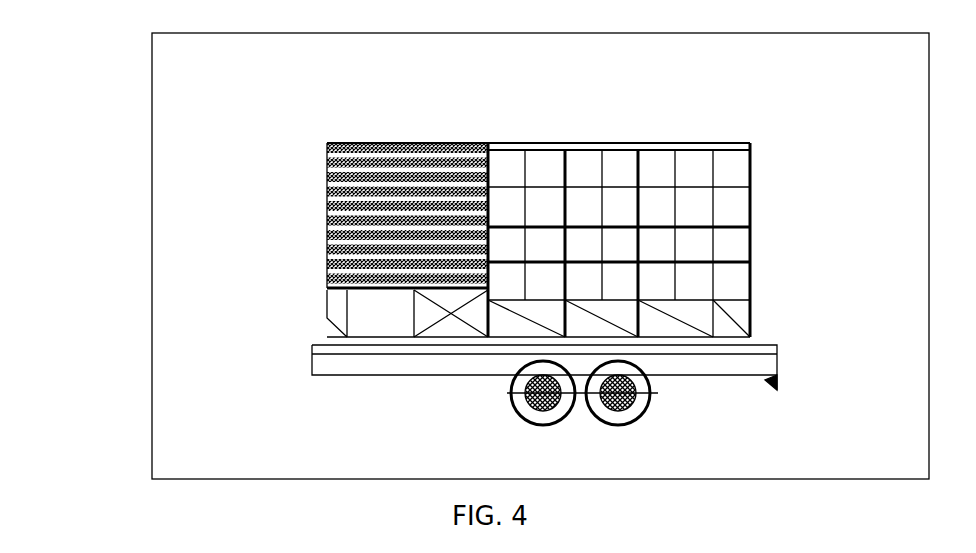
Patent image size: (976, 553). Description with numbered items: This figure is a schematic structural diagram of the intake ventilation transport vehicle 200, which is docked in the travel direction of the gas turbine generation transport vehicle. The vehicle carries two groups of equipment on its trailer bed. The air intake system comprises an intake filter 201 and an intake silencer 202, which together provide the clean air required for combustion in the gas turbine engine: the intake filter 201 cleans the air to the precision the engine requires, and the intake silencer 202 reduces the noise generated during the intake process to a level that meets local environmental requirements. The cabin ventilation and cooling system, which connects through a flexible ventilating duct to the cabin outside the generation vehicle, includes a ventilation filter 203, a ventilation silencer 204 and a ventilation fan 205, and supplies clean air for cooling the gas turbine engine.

The intake ventilation transport vehicle 200 is at (152, 118).
The intake filter 201 is at (658, 163).
The intake silencer 202 is at (430, 146).
The ventilation filter 203 is at (898, 283).
The ventilation silencer 204 is at (440, 313).
The ventilation fan 205 is at (360, 312).